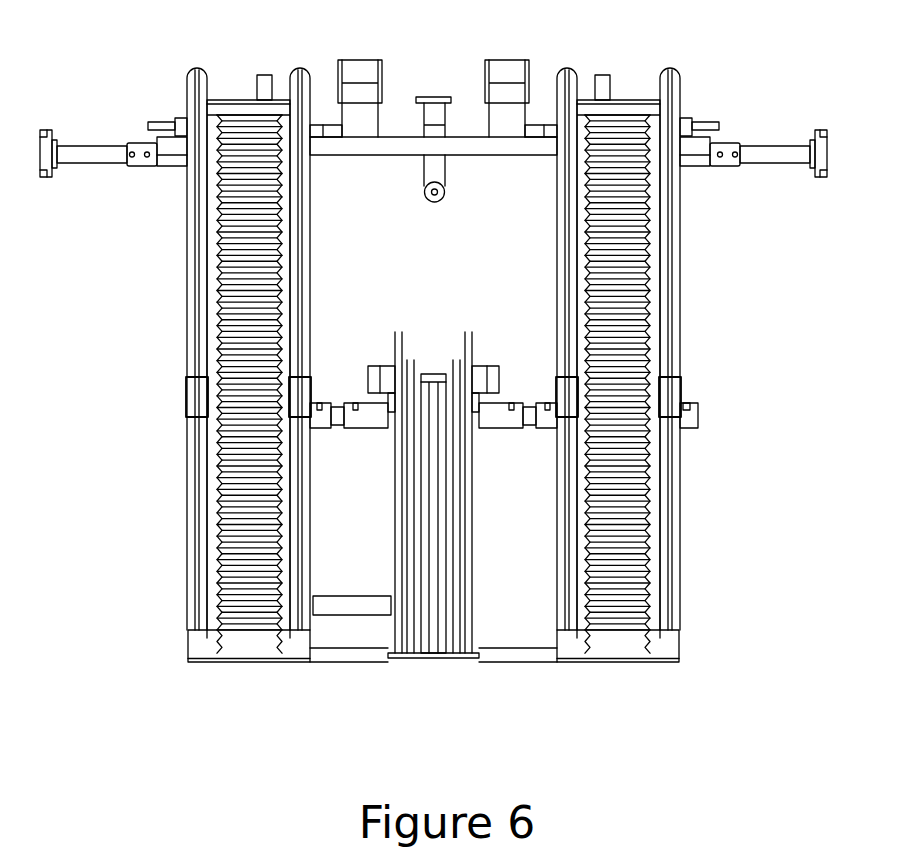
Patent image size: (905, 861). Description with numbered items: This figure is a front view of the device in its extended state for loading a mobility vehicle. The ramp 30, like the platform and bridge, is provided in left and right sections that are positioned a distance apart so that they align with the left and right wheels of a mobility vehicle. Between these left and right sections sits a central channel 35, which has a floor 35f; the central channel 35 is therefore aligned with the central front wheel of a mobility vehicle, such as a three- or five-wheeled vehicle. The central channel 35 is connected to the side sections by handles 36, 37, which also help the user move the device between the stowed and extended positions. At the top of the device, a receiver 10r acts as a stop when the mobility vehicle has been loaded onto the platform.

The receiver 10r is at (360, 60).
The ramp 30 is at (140, 416).
The central channel 35 is at (433, 532).
The floor 35f is at (437, 628).
The handle 36 is at (342, 665).
The handle 37 is at (520, 665).